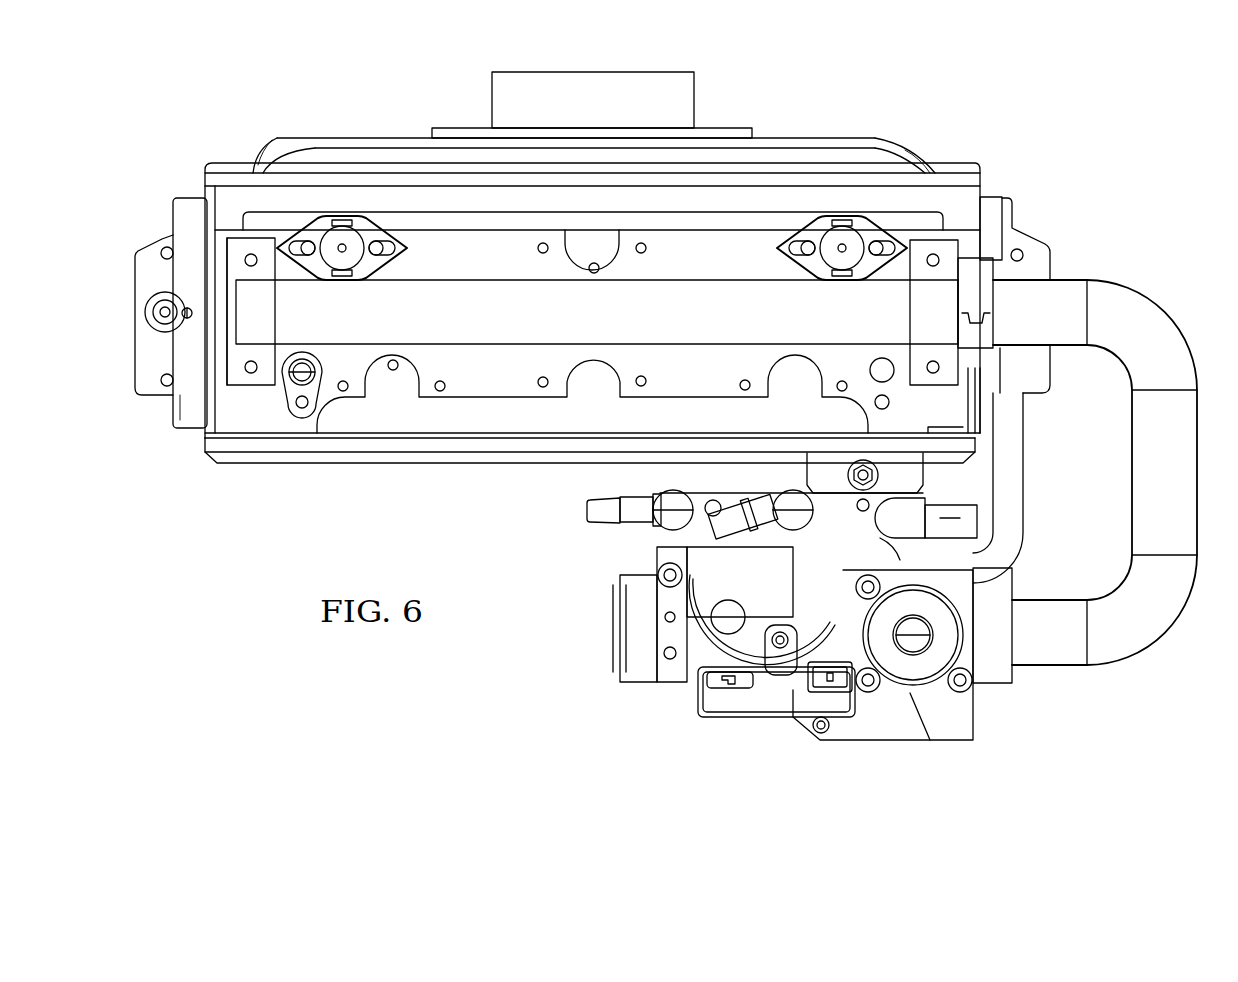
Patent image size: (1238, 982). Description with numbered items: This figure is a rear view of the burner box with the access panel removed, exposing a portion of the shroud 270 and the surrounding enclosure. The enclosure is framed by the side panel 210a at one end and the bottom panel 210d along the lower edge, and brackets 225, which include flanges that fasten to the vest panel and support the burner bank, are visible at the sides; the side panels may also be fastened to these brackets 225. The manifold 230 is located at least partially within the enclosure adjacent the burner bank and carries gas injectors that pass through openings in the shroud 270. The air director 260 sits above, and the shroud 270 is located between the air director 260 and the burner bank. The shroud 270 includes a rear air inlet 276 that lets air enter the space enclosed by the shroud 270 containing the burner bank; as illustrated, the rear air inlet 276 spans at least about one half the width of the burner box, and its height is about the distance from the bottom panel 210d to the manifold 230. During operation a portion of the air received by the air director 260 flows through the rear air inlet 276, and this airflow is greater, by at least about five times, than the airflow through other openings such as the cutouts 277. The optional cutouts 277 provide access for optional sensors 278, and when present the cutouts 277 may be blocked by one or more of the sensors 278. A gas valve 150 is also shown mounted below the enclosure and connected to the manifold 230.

The gas valve 150 is at (665, 684).
The side panel 210a is at (173, 208).
The bottom panel 210d is at (496, 470).
The brackets 225 is at (135, 352).
The manifold 230 is at (1130, 287).
The air director 260 is at (588, 72).
The shroud 270 is at (700, 353).
The rear air inlet 276 is at (612, 424).
The cutouts 277 is at (393, 359).
The sensors 278 is at (408, 250).